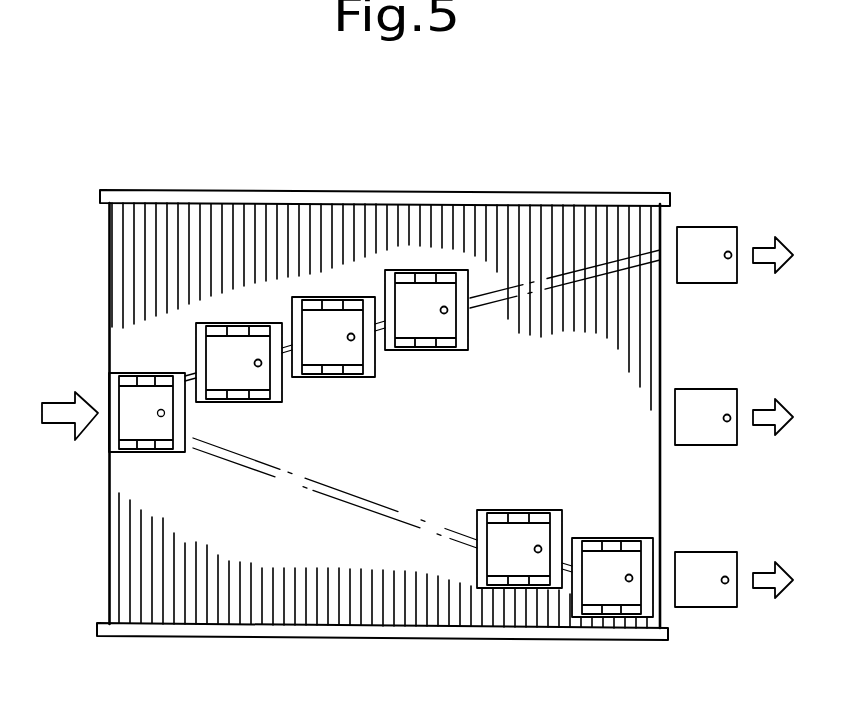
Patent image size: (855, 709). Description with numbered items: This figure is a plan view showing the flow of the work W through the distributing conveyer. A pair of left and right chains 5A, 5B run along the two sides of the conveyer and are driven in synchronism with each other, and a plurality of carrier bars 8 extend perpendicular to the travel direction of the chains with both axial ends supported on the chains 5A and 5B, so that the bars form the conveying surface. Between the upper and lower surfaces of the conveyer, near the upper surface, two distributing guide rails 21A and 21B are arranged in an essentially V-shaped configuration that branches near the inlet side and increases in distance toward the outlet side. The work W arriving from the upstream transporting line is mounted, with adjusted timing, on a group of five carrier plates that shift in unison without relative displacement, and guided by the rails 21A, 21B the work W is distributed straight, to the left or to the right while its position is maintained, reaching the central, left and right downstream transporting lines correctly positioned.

The chain 5A is at (343, 192).
The chain 5B is at (357, 630).
The carrier bar 8 is at (109, 508).
The work W is at (124, 425).
The distributing guide rail 21A is at (600, 260).
The distributing guide rail 21B is at (323, 493).